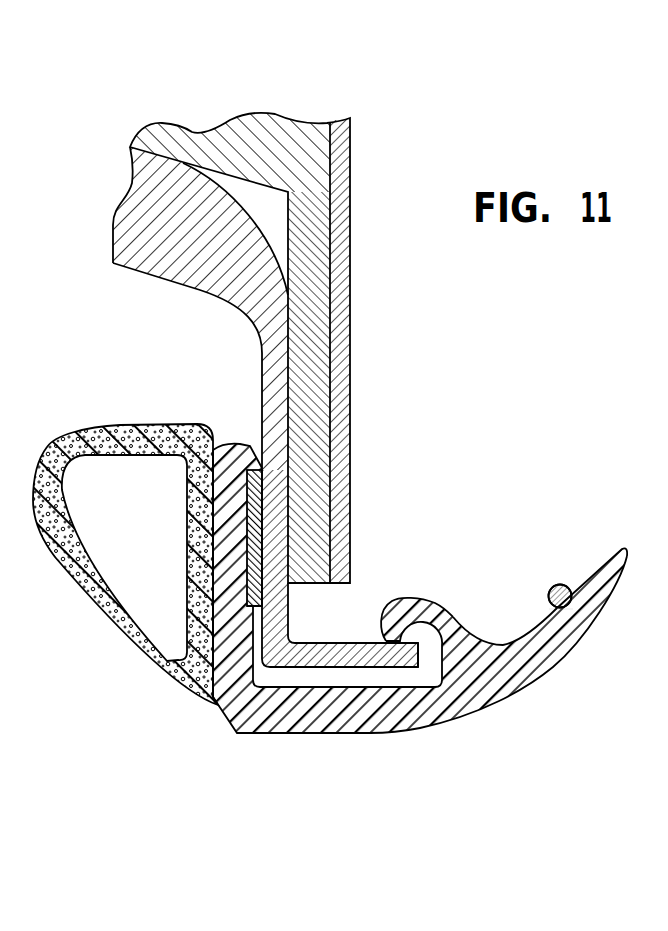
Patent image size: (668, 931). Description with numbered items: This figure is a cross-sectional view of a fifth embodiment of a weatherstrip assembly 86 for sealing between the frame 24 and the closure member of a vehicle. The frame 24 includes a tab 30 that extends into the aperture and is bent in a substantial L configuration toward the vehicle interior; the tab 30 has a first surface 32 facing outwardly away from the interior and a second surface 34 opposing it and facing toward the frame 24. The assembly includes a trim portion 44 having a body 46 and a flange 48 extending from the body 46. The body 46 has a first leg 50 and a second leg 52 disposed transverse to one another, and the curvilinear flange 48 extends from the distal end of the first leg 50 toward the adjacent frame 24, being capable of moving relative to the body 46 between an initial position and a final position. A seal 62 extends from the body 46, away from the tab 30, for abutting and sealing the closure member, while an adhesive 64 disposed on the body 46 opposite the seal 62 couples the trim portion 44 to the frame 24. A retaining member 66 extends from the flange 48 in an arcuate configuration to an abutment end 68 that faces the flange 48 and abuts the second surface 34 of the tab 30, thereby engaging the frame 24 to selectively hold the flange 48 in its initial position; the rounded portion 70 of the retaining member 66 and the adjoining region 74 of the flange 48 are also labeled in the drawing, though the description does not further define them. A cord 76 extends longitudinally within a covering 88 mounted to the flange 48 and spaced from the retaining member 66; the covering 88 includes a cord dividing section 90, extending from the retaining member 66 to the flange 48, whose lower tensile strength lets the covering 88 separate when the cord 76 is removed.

The frame 24 is at (104, 185).
The tab 30 is at (277, 452).
The first surface 32 is at (233, 453).
The second surface 34 is at (338, 643).
The trim portion 44 is at (216, 743).
The body 46 is at (205, 566).
The first leg 50 is at (333, 705).
The second leg 52 is at (233, 532).
The adhesive 64 is at (252, 592).
The seal 62 is at (117, 630).
The abutment end 68 is at (389, 660).
The retaining bulb 70 is at (413, 598).
The retaining member 66 is at (449, 598).
The lip base surface 74 is at (503, 647).
The flange 48 is at (575, 627).
The weatherstrip assembly 86 is at (430, 784).
The covering 88 is at (550, 589).
The cord 76 is at (568, 587).
The cord dividing section 90 is at (550, 611).